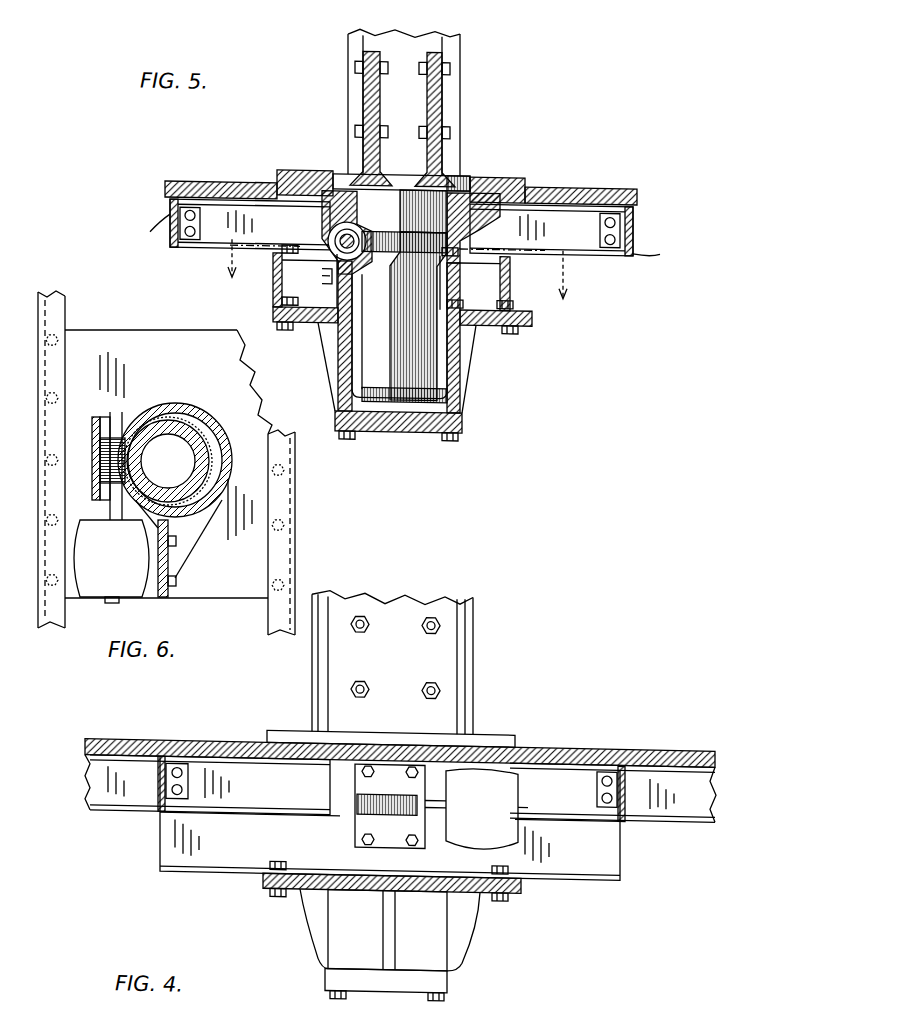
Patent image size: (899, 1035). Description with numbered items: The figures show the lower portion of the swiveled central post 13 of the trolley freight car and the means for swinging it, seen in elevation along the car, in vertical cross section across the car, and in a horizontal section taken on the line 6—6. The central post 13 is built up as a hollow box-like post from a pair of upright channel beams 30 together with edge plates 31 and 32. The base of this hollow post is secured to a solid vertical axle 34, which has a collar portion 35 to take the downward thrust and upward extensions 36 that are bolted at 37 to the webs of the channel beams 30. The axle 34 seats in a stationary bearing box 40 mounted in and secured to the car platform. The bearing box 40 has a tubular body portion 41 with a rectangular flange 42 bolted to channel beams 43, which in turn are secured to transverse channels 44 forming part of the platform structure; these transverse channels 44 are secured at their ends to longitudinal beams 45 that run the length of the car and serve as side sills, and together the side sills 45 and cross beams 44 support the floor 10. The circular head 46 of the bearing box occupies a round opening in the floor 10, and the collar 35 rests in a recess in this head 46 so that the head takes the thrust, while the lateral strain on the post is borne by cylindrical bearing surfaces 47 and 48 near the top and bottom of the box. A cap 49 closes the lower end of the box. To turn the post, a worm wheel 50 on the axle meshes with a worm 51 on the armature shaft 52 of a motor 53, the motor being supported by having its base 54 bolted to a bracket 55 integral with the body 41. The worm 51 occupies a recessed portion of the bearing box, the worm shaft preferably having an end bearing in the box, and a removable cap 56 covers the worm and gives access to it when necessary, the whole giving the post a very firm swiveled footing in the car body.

In FIG. 5, the section line 6— 6 is at (395, 269).
In FIG. 5, the floor deck 10 is at (600, 183).
In FIG. 4, the floor deck 10 is at (640, 727).
In FIG. 5, the central post 13 is at (405, 18).
In FIG. 4, the central post 13 is at (405, 595).
In FIG. 5, the upright channel beams 30 is at (352, 105).
In FIG. 4, the upright channel beams 30 is at (465, 632).
In FIG. 4, the edge plate 31 is at (470, 612).
In FIG. 5, the edge plate 32 is at (398, 155).
In FIG. 4, the edge plate 32 is at (312, 692).
In FIG. 5, the vertical axle 34 is at (385, 352).
In FIG. 6, the vertical axle 34 is at (168, 462).
In FIG. 5, the collar portion 35 is at (447, 178).
In FIG. 5, the upward extensions 36 is at (395, 90).
In FIG. 5, the bolts 37 is at (450, 68).
In FIG. 4, the bolts 37 is at (440, 690).
In FIG. 5, the bearing box 40 is at (470, 228).
In FIG. 5, the tubular body portion 41 is at (462, 370).
In FIG. 6, the tubular body portion 41 is at (230, 452).
In FIG. 4, the tubular body portion 41 is at (390, 930).
In FIG. 5, the rectangular flange 42 is at (500, 328).
In FIG. 6, the rectangular flange 42 is at (168, 464).
In FIG. 4, the rectangular flange 42 is at (490, 897).
In FIG. 5, the channel beams 43 is at (273, 298).
In FIG. 6, the channel beams 43 is at (58, 362).
In FIG. 4, the channel beams 43 is at (232, 877).
In FIG. 5, the transverse channels 44 is at (250, 224).
In FIG. 4, the transverse channels 44 is at (160, 792).
In FIG. 5, the longitudinal beams 45 is at (406, 240).
In FIG. 4, the longitudinal beams 45 is at (100, 808).
In FIG. 5, the circular head 46 is at (522, 178).
In FIG. 4, the circular head 46 is at (495, 733).
In FIG. 5, the cylindrical bearing surface 47 is at (357, 204).
In FIG. 5, the cylindrical bearing surface 48 is at (404, 400).
In FIG. 5, the cap 49 is at (405, 432).
In FIG. 4, the cap 49 is at (440, 984).
In FIG. 5, the worm wheel 50 is at (362, 256).
In FIG. 6, the worm wheel 50 is at (190, 427).
In FIG. 5, the worm 51 is at (330, 238).
In FIG. 6, the worm 51 is at (100, 470).
In FIG. 4, the worm 51 is at (355, 803).
In FIG. 6, the armature shaft 52 is at (110, 510).
In FIG. 4, the armature shaft 52 is at (436, 800).
In FIG. 6, the motor 53 is at (111, 561).
In FIG. 4, the motor 53 is at (487, 809).
In FIG. 6, the motor base 54 is at (172, 567).
In FIG. 6, the bracket 55 is at (176, 582).
In FIG. 5, the removable cap 56 is at (309, 274).
In FIG. 6, the removable cap 56 is at (94, 417).
In FIG. 4, the removable cap 56 is at (385, 848).